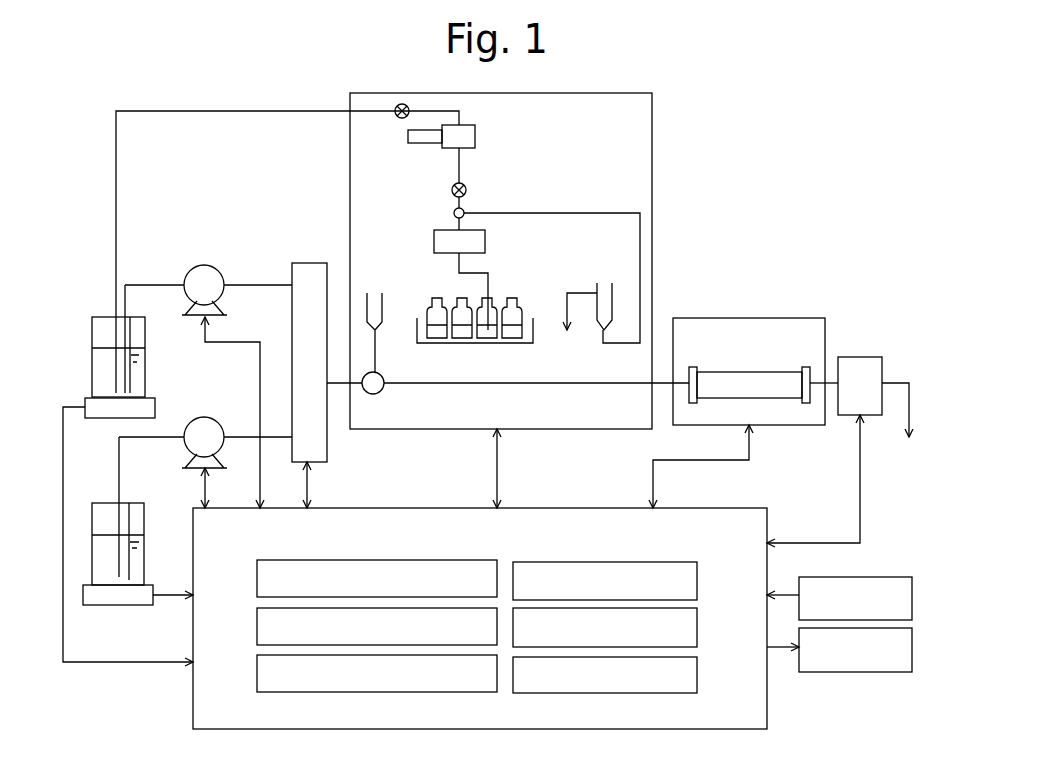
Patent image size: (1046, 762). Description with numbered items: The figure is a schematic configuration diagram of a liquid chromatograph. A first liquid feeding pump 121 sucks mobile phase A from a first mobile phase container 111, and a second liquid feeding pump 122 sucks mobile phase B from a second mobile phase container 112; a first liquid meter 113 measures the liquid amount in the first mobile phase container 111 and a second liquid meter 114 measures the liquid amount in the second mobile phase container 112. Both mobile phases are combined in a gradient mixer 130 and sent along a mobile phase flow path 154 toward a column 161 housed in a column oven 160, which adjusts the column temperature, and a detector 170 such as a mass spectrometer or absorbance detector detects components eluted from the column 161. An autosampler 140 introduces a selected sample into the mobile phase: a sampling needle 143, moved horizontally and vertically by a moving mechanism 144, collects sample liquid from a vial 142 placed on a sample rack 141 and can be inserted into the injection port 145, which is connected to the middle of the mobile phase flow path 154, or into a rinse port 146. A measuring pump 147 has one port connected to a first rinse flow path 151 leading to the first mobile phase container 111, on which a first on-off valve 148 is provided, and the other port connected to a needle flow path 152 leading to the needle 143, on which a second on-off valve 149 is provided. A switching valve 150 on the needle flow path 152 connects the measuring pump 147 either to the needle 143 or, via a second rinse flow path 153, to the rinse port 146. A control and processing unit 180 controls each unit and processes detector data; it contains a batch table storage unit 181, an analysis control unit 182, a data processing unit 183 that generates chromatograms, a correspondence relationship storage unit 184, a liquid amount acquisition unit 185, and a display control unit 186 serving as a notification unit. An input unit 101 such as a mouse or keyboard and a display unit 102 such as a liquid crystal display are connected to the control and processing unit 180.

The input unit 101 is at (888, 576).
The display unit 102 is at (888, 673).
The first mobile phase container 111 is at (105, 316).
The second mobile phase container 112 is at (105, 503).
The first liquid meter 113 is at (82, 398).
The second liquid meter 114 is at (135, 606).
The first liquid feeding pump 121 is at (223, 273).
The second liquid feeding pump 122 is at (222, 418).
The gradient mixer 130 is at (309, 263).
The autosampler 140 is at (653, 163).
The sample rack 141 is at (487, 345).
The vial 142 is at (535, 290).
The sampling needle 143 is at (491, 300).
The moving mechanism 144 is at (434, 240).
The injection port 145 is at (382, 297).
The rinse port 146 is at (612, 283).
The measuring pump 147 is at (476, 143).
The first on-off valve 148 is at (398, 118).
The second on-off valve 149 is at (467, 188).
The switching valve 150 is at (453, 213).
The first rinse flow path 151 is at (207, 112).
The needle flow path 152 is at (460, 170).
The second rinse flow path 153 is at (570, 208).
The mobile phase flow path 154 is at (440, 386).
The column oven 160 is at (795, 318).
The column 161 is at (720, 371).
The detector 170 is at (865, 357).
The control and processing unit 180 is at (565, 508).
The batch table storage unit 181 is at (256, 578).
The analysis control unit 182 is at (256, 625).
The data processing unit 183 is at (256, 672).
The correspondence relationship storage unit 184 is at (698, 584).
The liquid amount acquisition unit 185 is at (698, 631).
The display control unit 186 is at (698, 678).